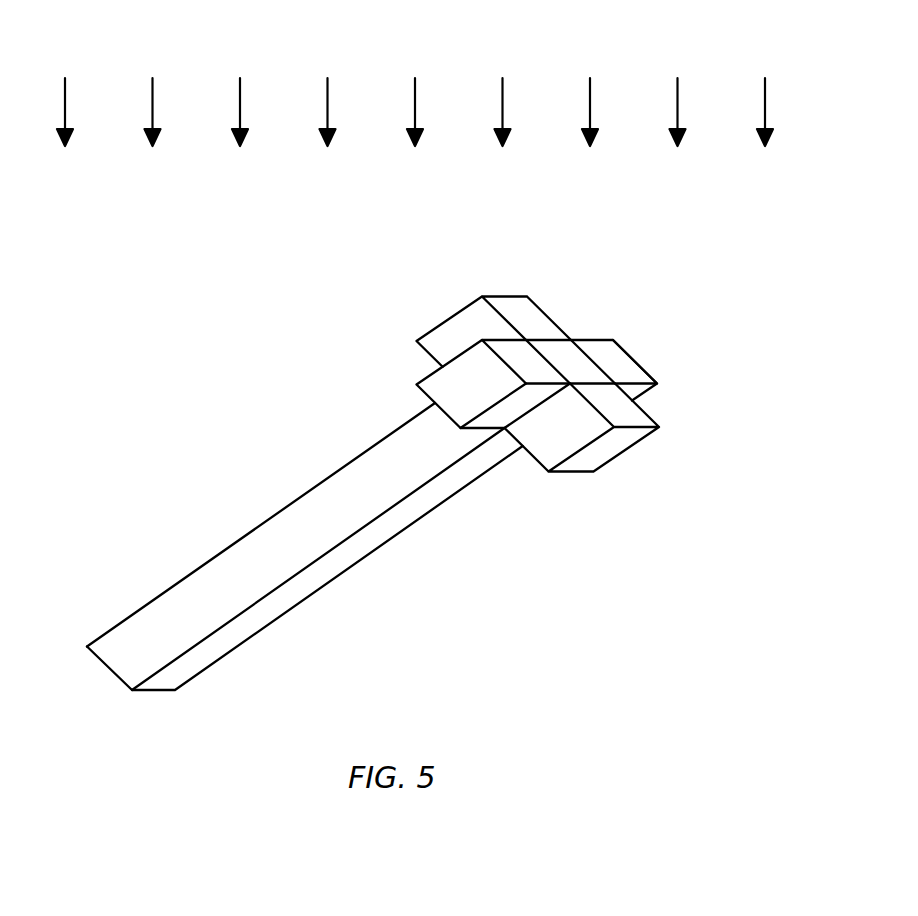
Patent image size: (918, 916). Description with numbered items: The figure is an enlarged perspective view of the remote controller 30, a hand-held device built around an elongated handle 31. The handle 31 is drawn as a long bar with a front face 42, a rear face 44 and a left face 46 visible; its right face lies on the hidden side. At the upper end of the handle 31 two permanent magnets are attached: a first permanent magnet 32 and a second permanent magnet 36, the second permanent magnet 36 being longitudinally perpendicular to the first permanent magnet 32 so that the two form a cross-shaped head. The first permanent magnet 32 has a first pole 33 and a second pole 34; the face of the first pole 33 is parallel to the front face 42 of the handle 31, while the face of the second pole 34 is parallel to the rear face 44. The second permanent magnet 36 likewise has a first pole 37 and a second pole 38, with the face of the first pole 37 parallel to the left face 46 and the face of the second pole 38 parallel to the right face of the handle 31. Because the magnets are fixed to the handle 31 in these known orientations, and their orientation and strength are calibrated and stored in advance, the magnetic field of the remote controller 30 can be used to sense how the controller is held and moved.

The remote controller 30 is at (306, 450).
The handle 31 is at (433, 512).
The first permanent magnet 32 is at (549, 314).
The first pole 33 is at (500, 297).
The second pole 34 is at (612, 450).
The second permanent magnet 36 is at (593, 338).
The first pole 37 is at (482, 384).
The second pole 38 is at (637, 362).
The front face 42 is at (283, 515).
The rear face 44 is at (305, 582).
The left face 46 is at (218, 582).